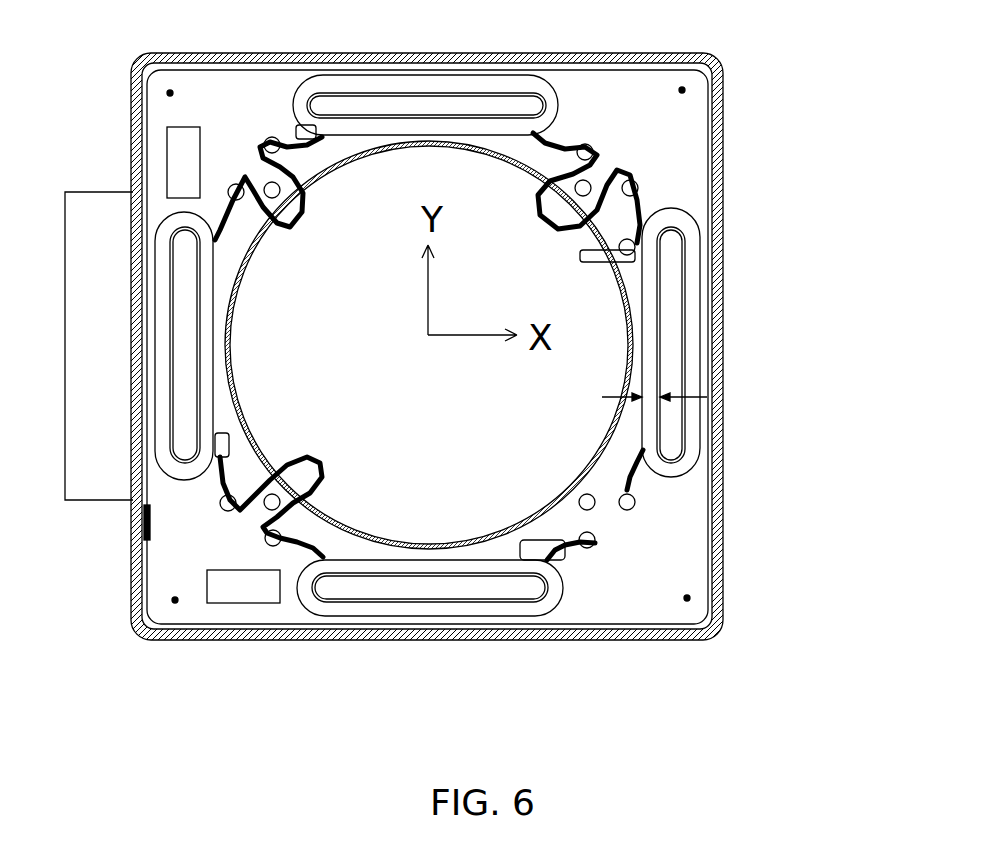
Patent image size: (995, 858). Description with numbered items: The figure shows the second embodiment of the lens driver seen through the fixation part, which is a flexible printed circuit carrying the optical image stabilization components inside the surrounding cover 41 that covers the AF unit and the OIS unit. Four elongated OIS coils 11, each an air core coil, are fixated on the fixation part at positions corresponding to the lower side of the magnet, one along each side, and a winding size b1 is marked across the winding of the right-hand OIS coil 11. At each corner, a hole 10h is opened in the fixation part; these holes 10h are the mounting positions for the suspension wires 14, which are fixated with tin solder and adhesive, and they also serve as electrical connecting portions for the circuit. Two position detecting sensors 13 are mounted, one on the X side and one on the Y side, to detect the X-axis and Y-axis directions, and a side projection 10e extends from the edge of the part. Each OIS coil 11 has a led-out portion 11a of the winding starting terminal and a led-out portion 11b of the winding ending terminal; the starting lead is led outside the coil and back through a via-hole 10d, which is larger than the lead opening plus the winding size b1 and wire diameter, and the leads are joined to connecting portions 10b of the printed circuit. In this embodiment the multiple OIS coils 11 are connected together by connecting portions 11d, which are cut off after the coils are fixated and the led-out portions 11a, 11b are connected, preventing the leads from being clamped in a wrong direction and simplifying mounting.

The cover 41 is at (723, 122).
The suspension wire 14 is at (687, 598).
The hole 10h is at (687, 598).
The position detecting sensor 13 is at (183, 150).
The side projection 10e is at (102, 468).
The OIS coil 11 is at (685, 330).
The winding size of the OIS coil b1 is at (693, 402).
The led-out portion of the winding starting terminal 11a is at (278, 137).
The led-out portion of the winding ending terminal 11b is at (555, 140).
The via-hole 10d is at (327, 145).
The connecting portion 11d is at (530, 200).
The connecting portion 10b is at (268, 547).